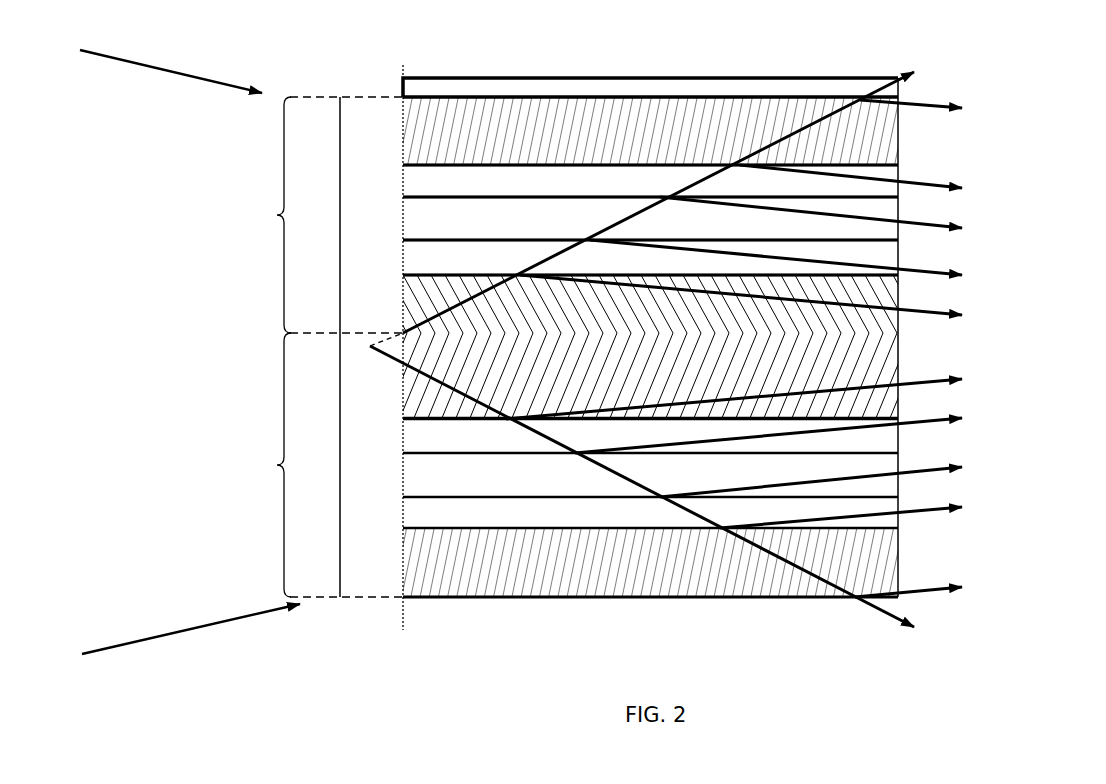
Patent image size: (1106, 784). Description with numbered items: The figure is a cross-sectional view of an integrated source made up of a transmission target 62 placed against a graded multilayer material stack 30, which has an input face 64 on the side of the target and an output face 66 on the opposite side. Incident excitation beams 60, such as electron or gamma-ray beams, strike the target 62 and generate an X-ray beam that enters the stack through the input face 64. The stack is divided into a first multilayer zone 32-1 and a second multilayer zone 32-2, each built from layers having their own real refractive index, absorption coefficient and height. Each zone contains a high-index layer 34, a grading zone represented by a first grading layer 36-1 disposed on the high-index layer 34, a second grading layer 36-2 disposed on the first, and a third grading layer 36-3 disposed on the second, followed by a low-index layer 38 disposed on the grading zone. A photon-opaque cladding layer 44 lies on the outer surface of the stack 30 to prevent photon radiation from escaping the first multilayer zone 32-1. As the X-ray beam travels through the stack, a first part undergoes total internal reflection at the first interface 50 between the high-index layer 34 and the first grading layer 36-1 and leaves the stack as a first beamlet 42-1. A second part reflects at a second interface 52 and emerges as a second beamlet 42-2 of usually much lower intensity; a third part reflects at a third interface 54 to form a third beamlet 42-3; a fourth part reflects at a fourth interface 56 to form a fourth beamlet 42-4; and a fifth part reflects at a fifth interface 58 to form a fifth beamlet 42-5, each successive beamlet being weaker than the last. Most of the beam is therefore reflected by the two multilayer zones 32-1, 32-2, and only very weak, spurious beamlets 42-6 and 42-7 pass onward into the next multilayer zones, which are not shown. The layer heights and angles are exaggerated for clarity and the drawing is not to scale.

The multilayer material stack 30 is at (727, 76).
The photon-opaque cladding layer 44 is at (593, 84).
The fifth interface 58 is at (428, 97).
The low-index layer 38 is at (904, 129).
The fourth interface 56 is at (598, 167).
The third grading layer 36-3 is at (887, 172).
The second grading layer 36-2 is at (877, 211).
The first grading layer 36-1 is at (877, 253).
The third interface 54 is at (420, 197).
The second interface 52 is at (423, 240).
The first interface 50 is at (423, 275).
The high-index layer 34 is at (883, 293).
The output face 66 is at (900, 558).
The target 62 is at (358, 347).
The input face 64 is at (404, 563).
The first multilayer zone 32-1 is at (277, 215).
The second multilayer zone 32-2 is at (277, 465).
The incident excitation beams 60 is at (226, 90).
The first beamlet 42-1 is at (945, 310).
The second beamlet 42-2 is at (940, 270).
The third beamlet 42-3 is at (938, 225).
The fourth beamlet 42-4 is at (938, 184).
The fifth beamlet 42-5 is at (940, 101).
The spurious beamlet 42-6 is at (887, 77).
The weak beamlet 42-7 is at (888, 608).